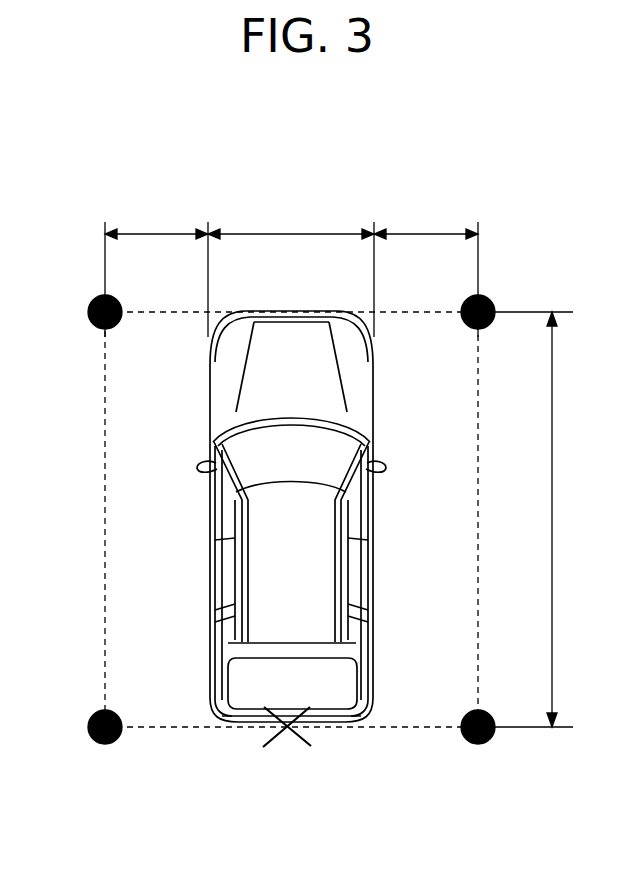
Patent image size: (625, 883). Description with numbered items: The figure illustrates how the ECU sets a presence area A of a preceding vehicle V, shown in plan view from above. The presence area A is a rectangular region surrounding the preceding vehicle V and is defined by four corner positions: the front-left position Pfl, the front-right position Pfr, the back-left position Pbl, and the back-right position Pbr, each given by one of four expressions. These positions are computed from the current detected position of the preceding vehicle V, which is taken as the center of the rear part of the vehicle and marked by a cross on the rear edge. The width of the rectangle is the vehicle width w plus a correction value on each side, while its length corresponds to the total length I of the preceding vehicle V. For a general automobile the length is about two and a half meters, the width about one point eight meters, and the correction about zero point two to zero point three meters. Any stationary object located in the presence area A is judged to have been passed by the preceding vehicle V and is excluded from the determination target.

The preceding vehicle V is at (208, 412).
The presence area A is at (104, 553).
The position Pfl is at (90, 305).
The position Pfr is at (498, 305).
The position Pbl is at (105, 743).
The position Pbr is at (478, 743).
The vehicle width w is at (291, 269).
The total length of the preceding vehicle I is at (525, 519).